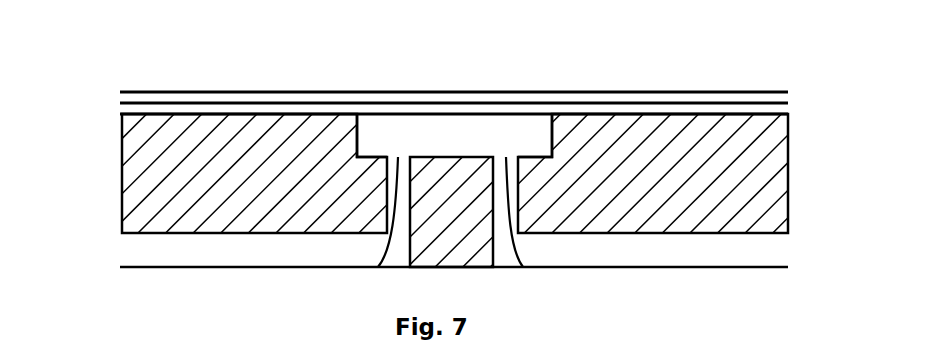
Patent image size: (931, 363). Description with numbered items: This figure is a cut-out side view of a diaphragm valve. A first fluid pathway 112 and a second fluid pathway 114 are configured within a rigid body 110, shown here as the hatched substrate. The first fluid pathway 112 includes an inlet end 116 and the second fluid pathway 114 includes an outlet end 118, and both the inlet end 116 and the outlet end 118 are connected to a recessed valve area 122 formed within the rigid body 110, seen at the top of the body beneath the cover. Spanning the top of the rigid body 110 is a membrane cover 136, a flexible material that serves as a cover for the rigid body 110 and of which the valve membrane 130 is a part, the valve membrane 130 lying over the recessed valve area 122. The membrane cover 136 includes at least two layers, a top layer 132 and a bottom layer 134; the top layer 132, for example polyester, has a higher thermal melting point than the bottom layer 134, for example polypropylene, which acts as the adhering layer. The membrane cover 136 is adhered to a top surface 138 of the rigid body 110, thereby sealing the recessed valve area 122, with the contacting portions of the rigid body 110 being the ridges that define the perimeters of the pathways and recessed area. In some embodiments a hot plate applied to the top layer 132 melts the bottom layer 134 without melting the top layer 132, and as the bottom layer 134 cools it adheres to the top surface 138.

The rigid body 110 is at (110, 117).
The first fluid pathway 112 is at (187, 256).
The second fluid pathway 114 is at (674, 256).
The inlet end 116 is at (378, 268).
The outlet end 118 is at (523, 268).
The recessed valve area 122 is at (433, 147).
The valve membrane 130 is at (550, 73).
The top layer 132 is at (120, 92).
The bottom layer 134 is at (120, 109).
The membrane cover 136 is at (800, 92).
The top surface 138 is at (730, 114).